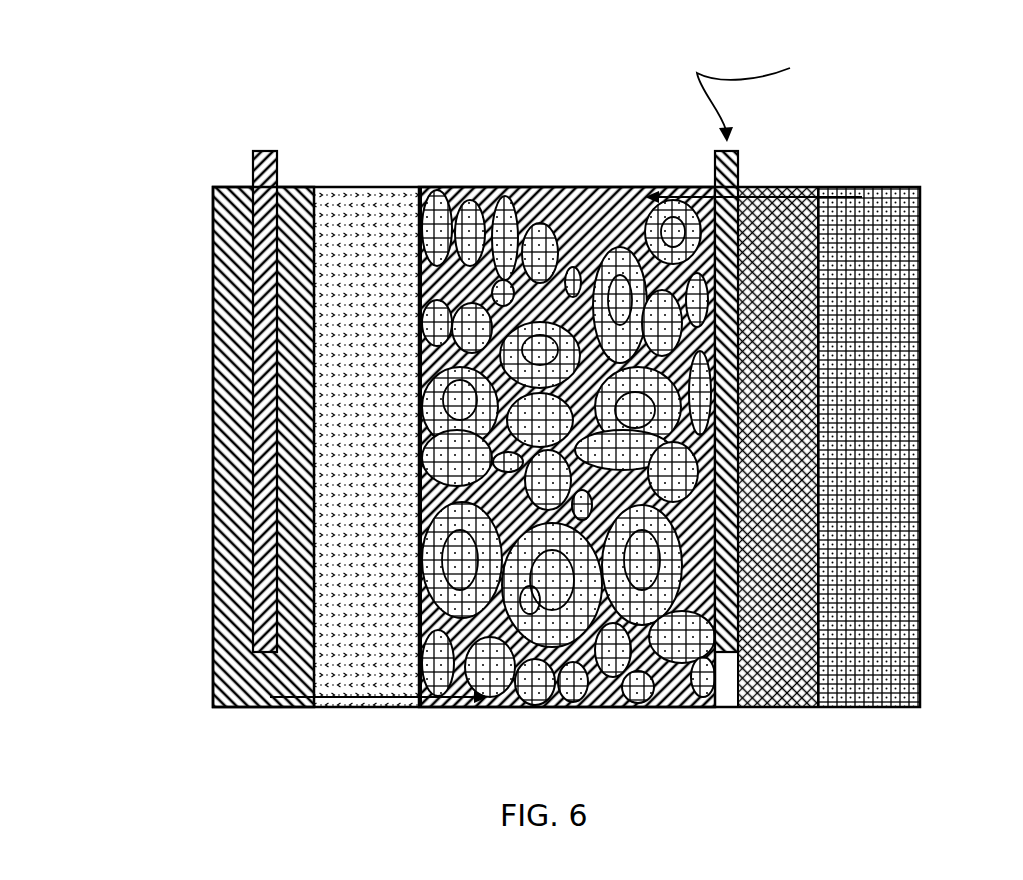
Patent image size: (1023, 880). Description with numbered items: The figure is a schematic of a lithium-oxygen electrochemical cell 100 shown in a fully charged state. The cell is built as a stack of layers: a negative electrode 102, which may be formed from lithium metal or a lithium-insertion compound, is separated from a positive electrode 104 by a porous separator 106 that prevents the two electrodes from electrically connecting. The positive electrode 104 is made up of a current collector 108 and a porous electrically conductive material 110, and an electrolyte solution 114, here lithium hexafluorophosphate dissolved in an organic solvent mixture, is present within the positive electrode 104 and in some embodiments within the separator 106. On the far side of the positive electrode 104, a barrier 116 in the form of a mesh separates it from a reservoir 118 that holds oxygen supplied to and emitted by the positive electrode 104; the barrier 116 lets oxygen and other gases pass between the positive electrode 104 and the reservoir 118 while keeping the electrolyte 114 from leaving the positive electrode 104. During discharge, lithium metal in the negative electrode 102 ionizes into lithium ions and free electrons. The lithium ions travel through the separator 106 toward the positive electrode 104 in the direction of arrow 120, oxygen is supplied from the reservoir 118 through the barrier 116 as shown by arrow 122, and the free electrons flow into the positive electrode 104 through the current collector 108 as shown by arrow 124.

The electrochemical cell 100 is at (142, 136).
The negative electrode 102 is at (213, 373).
The positive electrode 104 is at (548, 707).
The porous separator 106 is at (390, 187).
The current collector 108 is at (728, 152).
The porous electrically conductive material 110 is at (535, 187).
The electrolyte solution 114 is at (538, 707).
The barrier 116 is at (790, 187).
The reservoir 118 is at (920, 208).
The arrow 120 is at (380, 707).
The arrow 122 is at (705, 197).
The arrow 124 is at (765, 96).